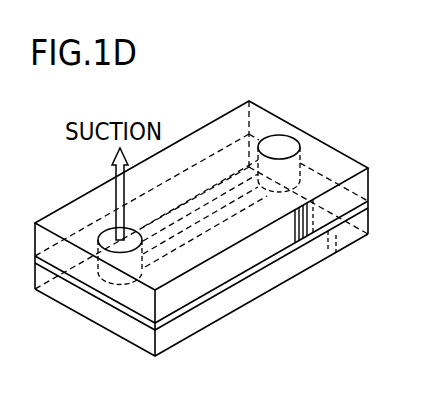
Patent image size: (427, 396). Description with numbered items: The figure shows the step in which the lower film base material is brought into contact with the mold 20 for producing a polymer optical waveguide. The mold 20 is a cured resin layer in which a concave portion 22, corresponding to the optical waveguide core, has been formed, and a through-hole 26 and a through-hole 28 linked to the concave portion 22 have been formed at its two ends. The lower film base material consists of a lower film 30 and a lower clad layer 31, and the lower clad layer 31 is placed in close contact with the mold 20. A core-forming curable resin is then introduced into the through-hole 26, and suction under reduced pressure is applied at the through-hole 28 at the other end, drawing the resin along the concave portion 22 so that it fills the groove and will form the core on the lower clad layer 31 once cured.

The mold 20 is at (322, 158).
The concave portion 22 is at (178, 237).
The through-hole 26 is at (281, 143).
The through-hole 28 is at (116, 243).
The lower film 30 is at (297, 258).
The lower clad layer 31 is at (178, 313).